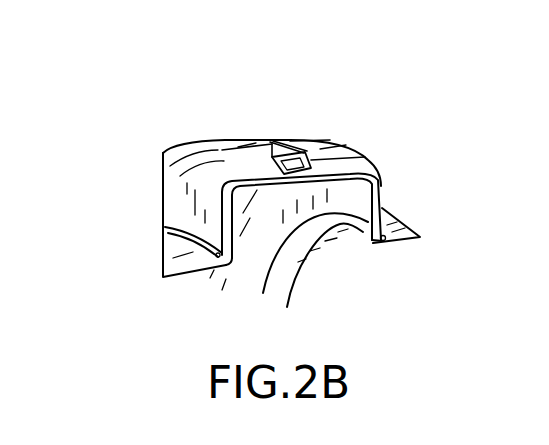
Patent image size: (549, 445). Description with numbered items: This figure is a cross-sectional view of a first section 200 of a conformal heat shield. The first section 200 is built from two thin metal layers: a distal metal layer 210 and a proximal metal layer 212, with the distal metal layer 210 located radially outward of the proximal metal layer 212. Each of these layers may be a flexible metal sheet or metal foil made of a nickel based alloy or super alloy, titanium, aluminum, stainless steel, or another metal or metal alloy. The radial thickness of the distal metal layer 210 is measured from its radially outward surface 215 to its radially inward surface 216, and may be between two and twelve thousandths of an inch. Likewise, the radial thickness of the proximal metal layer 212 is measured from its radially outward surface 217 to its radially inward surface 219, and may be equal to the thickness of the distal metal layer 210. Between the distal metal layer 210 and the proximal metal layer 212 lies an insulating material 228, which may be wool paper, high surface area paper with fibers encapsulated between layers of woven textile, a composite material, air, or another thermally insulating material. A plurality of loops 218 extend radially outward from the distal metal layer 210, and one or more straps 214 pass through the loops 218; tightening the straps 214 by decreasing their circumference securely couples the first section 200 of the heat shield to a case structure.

The first section 200 is at (146, 108).
The distal metal layer 210 is at (354, 143).
The proximal metal layer 212 is at (365, 234).
The strap 214 is at (278, 142).
The radially outward surface 215 is at (167, 228).
The radially inward surface 216 is at (168, 230).
The radially outward surface 217 is at (407, 232).
The loop 218 is at (319, 143).
The radially inward surface 219 is at (397, 243).
The insulating material 228 is at (233, 147).